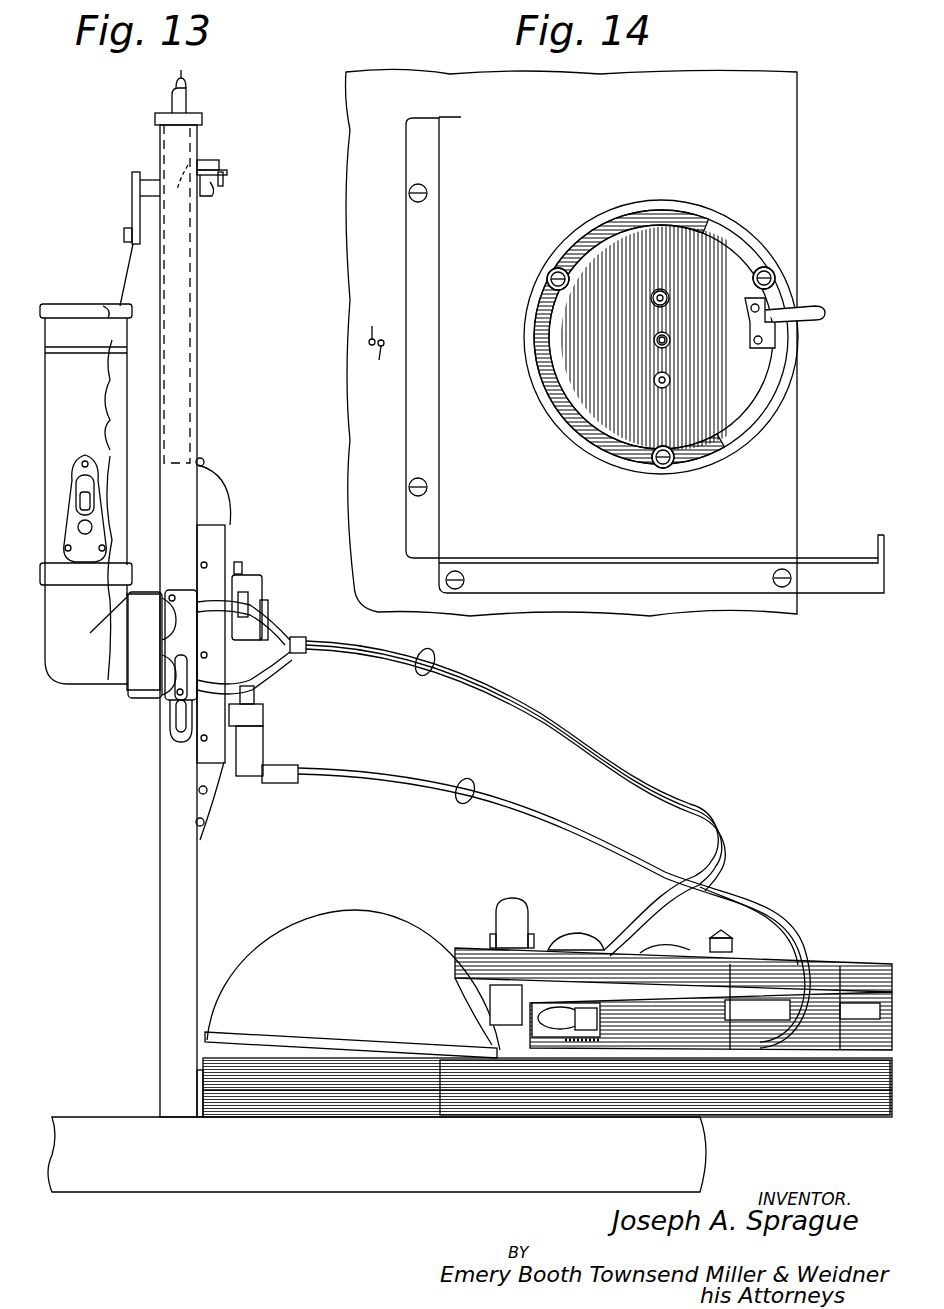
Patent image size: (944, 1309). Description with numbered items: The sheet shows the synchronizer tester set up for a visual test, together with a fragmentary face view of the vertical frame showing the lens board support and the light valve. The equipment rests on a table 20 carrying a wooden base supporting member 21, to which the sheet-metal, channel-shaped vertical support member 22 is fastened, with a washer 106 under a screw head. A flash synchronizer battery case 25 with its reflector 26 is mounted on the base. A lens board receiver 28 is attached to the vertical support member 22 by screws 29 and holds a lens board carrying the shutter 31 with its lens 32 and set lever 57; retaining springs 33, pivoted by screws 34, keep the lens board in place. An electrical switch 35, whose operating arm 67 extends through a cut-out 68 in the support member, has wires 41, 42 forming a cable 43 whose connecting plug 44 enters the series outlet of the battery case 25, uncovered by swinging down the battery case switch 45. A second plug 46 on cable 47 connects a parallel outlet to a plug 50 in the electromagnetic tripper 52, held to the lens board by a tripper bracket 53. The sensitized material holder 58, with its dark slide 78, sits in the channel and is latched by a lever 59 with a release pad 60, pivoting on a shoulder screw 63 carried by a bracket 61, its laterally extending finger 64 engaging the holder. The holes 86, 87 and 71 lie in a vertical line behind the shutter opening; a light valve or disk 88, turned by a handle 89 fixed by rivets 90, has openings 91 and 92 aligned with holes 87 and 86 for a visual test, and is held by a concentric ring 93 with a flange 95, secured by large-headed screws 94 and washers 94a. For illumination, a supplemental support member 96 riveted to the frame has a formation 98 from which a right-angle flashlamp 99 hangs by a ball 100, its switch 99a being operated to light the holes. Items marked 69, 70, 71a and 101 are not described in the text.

In FIG. 13, the table 20 is at (210, 1182).
In FIG. 13, the base supporting member 21 is at (285, 1100).
In FIG. 13, the vertical support member 22 is at (197, 881).
In FIG. 14, the vertical support member 22 is at (778, 498).
In FIG. 13, the flash synchronizer battery case 25 is at (860, 970).
In FIG. 13, the reflector 26 is at (275, 945).
In FIG. 13, the lens board receiver 28 is at (212, 745).
In FIG. 14, the lens board receiver 28 is at (439, 250).
In FIG. 13, the screws 29 is at (207, 792).
In FIG. 14, the screws 29 is at (410, 200).
In FIG. 13, the shutter 31 is at (258, 585).
In FIG. 13, the lens 32 is at (268, 622).
In FIG. 13, the retaining springs 33 is at (230, 497).
In FIG. 13, the screws 34 is at (204, 462).
In FIG. 13, the electrical switch 35 is at (175, 641).
In FIG. 13, the wire 41 is at (285, 632).
In FIG. 13, the wire 42 is at (285, 665).
In FIG. 13, the cable 43 is at (434, 652).
In FIG. 13, the connecting plug 44 is at (578, 933).
In FIG. 13, the battery case switch 45 is at (700, 935).
In FIG. 13, the electrical connecting plug 46 is at (560, 1020).
In FIG. 13, the cable 47 is at (460, 800).
In FIG. 13, the electrical plug 50 is at (288, 780).
In FIG. 13, the electromagnetic tripper 52 is at (263, 748).
In FIG. 13, the tripper bracket 53 is at (263, 716).
In FIG. 13, the set lever 57 is at (242, 566).
In FIG. 13, the sensitized material holder 58 is at (178, 372).
In FIG. 13, the lever 59 is at (222, 170).
In FIG. 13, the release pad 60 is at (224, 178).
In FIG. 13, the bracket 61 is at (208, 196).
In FIG. 13, the shoulder screw 63 is at (212, 160).
In FIG. 13, the laterally extending finger 64 is at (176, 186).
In FIG. 13, the operating arm 67 is at (182, 722).
In FIG. 13, the cut-out or opening 68 is at (178, 722).
In FIG. 14, the pin 69 is at (371, 326).
In FIG. 14, the pin 70 is at (378, 363).
In FIG. 14, the hole 71 is at (655, 346).
In FIG. 14, the aperture center 71a is at (668, 337).
In FIG. 13, the dark slide 78 is at (188, 104).
In FIG. 14, the hole 86 is at (670, 380).
In FIG. 14, the hole 87 is at (668, 296).
In FIG. 14, the light valve or disk 88 is at (556, 322).
In FIG. 14, the handle 89 is at (810, 320).
In FIG. 14, the rivets 90 is at (750, 310).
In FIG. 14, the opening 91 is at (652, 305).
In FIG. 14, the opening 92 is at (660, 385).
In FIG. 14, the ring 93 is at (536, 380).
In FIG. 14, the screws 94 is at (549, 281).
In FIG. 14, the washers 94a is at (552, 270).
In FIG. 14, the flange 95 is at (546, 378).
In FIG. 13, the supplemental support member 96 is at (132, 210).
In FIG. 13, the formation 98 is at (124, 236).
In FIG. 13, the flashlamp 99 is at (100, 497).
In FIG. 13, the switch 99a is at (82, 498).
In FIG. 13, the ball 100 is at (124, 278).
In FIG. 13, the slide plate 101 is at (470, 1095).
In FIG. 13, the washers 106 is at (200, 1095).